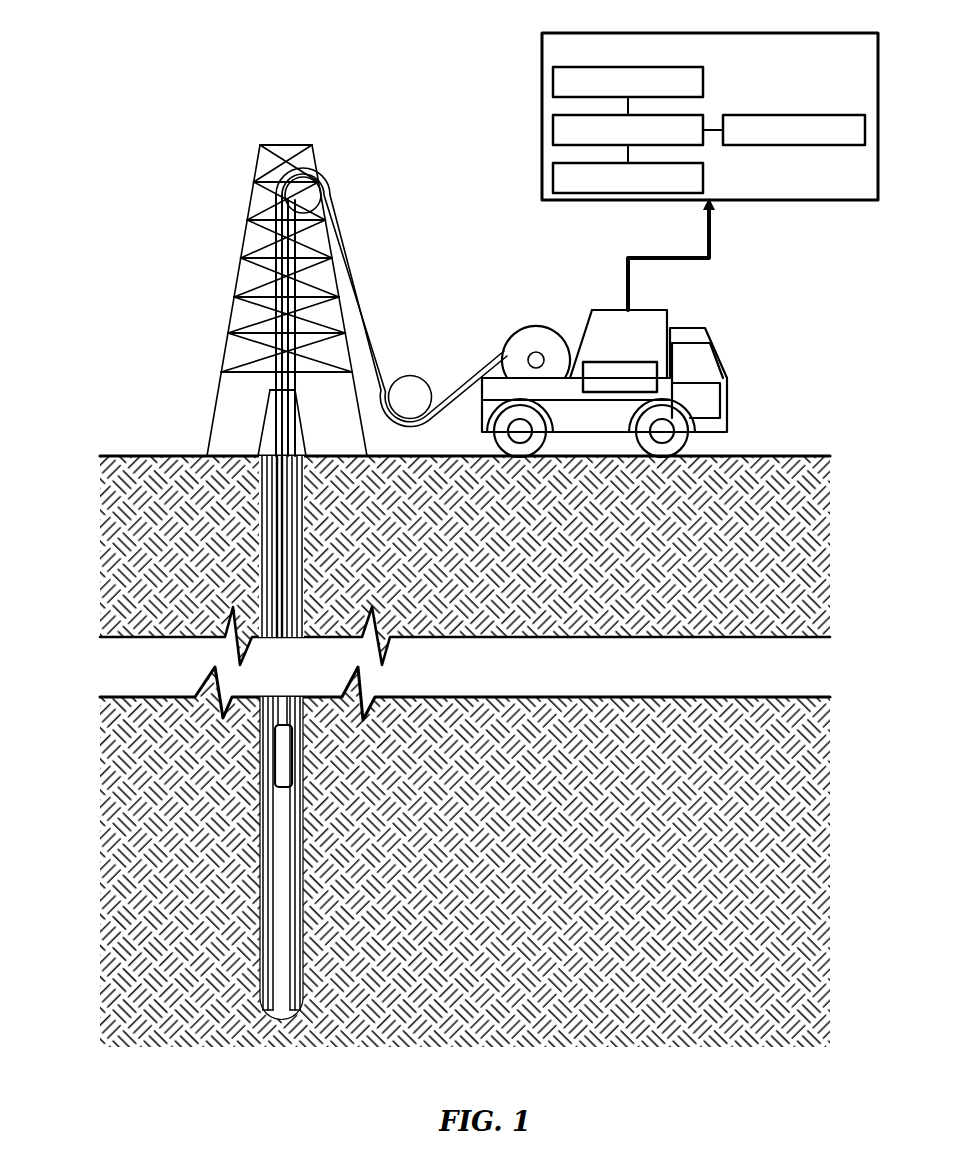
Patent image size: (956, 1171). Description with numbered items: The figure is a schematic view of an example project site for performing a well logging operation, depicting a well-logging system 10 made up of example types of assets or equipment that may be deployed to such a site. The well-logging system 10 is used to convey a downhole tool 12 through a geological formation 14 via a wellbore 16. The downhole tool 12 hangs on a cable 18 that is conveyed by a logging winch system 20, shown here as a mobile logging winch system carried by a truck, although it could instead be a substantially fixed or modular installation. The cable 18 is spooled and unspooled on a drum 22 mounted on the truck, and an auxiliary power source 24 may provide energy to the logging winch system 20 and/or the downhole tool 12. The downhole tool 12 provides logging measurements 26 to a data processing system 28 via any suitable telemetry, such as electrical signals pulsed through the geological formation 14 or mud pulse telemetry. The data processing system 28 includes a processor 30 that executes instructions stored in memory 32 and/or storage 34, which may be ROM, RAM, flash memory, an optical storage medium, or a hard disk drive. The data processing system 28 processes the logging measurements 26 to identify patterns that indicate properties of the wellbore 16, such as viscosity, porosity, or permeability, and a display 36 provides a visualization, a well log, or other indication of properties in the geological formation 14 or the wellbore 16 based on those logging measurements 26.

The well-logging system 10 is at (170, 199).
The downhole tool 12 is at (270, 735).
The geological formation 14 is at (110, 807).
The wellbore 16 is at (250, 511).
The cable 18 is at (376, 293).
The logging winch system 20 is at (594, 342).
The drum 22 is at (533, 327).
The auxiliary power source 24 is at (606, 365).
The logging measurements 26 is at (714, 232).
The data processing system 28 is at (685, 101).
The processor 30 is at (682, 113).
The memory 32 is at (549, 78).
The storage 34 is at (698, 178).
The display 36 is at (797, 111).